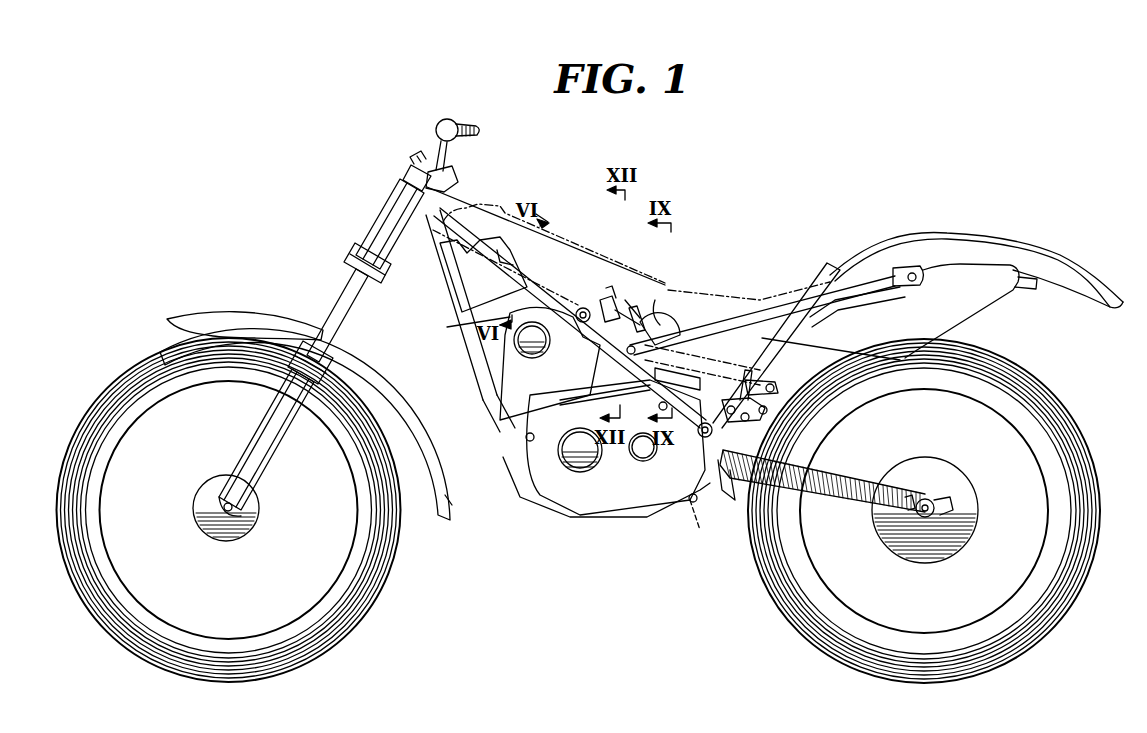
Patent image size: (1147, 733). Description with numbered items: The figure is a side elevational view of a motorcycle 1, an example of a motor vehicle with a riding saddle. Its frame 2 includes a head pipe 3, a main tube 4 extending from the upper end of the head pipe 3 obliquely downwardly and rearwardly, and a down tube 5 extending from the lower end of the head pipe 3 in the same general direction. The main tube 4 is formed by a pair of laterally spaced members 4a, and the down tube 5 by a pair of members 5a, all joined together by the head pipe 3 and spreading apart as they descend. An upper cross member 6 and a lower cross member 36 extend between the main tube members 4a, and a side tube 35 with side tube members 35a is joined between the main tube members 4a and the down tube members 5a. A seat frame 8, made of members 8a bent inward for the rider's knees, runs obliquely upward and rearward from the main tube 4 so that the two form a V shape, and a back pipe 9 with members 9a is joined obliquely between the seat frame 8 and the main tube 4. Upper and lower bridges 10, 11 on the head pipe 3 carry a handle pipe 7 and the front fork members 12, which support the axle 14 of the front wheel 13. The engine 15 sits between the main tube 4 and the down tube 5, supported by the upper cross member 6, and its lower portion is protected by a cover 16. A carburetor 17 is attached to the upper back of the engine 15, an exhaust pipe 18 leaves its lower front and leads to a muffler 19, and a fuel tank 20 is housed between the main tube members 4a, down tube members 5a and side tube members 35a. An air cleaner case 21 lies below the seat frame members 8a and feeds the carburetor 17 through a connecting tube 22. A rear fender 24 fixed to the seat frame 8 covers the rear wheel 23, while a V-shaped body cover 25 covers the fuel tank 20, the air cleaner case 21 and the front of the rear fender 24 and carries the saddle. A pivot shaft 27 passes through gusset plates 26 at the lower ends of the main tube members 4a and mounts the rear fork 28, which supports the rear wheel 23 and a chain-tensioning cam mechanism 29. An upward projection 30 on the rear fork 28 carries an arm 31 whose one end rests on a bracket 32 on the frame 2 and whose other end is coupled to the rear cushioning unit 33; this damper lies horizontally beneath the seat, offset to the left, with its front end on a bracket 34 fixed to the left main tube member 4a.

The motorcycle 1 is at (700, 195).
The frame 2 is at (556, 283).
The head pipe 3 is at (395, 232).
The main tube 4 is at (527, 268).
The main tube member 4a is at (617, 312).
The down tube 5 is at (450, 330).
The down tube member 5a is at (463, 347).
The upper cross member 6 is at (585, 300).
The handle pipe 7 is at (440, 160).
The seat frame 8 is at (808, 300).
The seat frame member 8a is at (760, 300).
The back pipe 9 is at (815, 316).
The back pipe member 9a is at (790, 350).
The upper bridge 10 is at (408, 176).
The lower bridge 11 is at (365, 262).
The front fork member 12 is at (348, 305).
The front wheel 13 is at (106, 392).
The axle 14 is at (231, 540).
The engine 15 is at (478, 438).
The cover 16 is at (548, 492).
The carburetor 17 is at (615, 325).
The exhaust pipe 18 is at (465, 405).
The muffler 19 is at (990, 290).
The fuel tank 20 is at (485, 205).
The air cleaner case 21 is at (768, 392).
The connecting tube 22 is at (667, 327).
The rear wheel 23 is at (1005, 650).
The rear fender 24 is at (960, 240).
The body cover 25 is at (728, 300).
The gusset plate 26 is at (680, 470).
The pivot shaft 27 is at (672, 463).
The rear fork 28 is at (907, 500).
The cam mechanism 29 is at (948, 500).
The upward projection 30 is at (822, 488).
The arm 31 is at (790, 425).
The bracket 32 is at (717, 497).
The rear cushioning unit 33 is at (690, 380).
The bracket 34 is at (598, 342).
The side tube 35 is at (448, 304).
The side tube member 35a is at (476, 292).
The lower cross member 36 is at (700, 505).